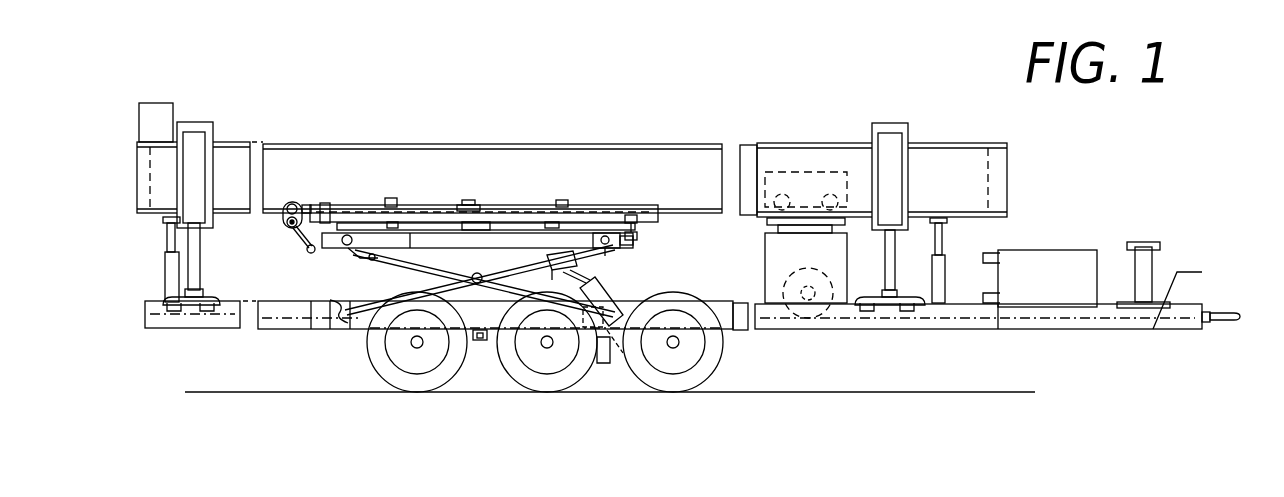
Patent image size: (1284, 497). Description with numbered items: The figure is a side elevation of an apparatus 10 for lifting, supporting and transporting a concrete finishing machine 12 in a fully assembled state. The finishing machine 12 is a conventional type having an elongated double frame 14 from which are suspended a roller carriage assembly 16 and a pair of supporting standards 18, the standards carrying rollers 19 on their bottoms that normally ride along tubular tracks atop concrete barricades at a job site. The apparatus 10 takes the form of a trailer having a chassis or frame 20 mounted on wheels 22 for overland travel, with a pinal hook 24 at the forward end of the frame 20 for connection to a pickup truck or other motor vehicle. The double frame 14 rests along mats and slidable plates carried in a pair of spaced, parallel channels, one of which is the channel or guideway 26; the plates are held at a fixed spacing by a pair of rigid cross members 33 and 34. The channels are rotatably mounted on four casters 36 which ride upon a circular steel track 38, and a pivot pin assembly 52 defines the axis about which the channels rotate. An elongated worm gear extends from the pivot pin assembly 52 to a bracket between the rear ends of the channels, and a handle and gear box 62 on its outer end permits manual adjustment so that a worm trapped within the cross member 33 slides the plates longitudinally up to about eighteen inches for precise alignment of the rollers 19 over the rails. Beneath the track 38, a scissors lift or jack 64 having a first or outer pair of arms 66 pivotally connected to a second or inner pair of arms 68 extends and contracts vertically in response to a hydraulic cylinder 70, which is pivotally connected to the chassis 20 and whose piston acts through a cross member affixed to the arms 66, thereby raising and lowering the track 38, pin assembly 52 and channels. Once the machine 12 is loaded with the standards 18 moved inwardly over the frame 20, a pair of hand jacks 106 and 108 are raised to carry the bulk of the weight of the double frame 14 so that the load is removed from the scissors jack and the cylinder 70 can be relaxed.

The apparatus 10 is at (647, 247).
The concrete finishing machine 12 is at (833, 108).
The elongated double frame 14 is at (667, 165).
The roller carriage assembly 16 is at (773, 263).
The supporting standards 18 is at (202, 247).
The rollers 19 is at (210, 303).
The chassis or frame 20 is at (912, 330).
The wheels 22 is at (508, 382).
The pinal hook 24 is at (1215, 313).
The channel or guideway 26 is at (628, 210).
The rigid cross member 33 is at (392, 198).
The rigid cross member 34 is at (562, 200).
The casters 36 is at (548, 222).
The circular steel track 38 is at (596, 220).
The pivot pin assembly 52 is at (478, 205).
The handle and gear box 62 is at (283, 223).
The scissors lift or jack 64 is at (500, 268).
The first or outer pair of arms 66 is at (608, 250).
The second or inner pair of arms 68 is at (360, 256).
The hydraulic cylinder 70 is at (600, 287).
The hand jack 106 is at (170, 272).
The hand jack 108 is at (947, 263).